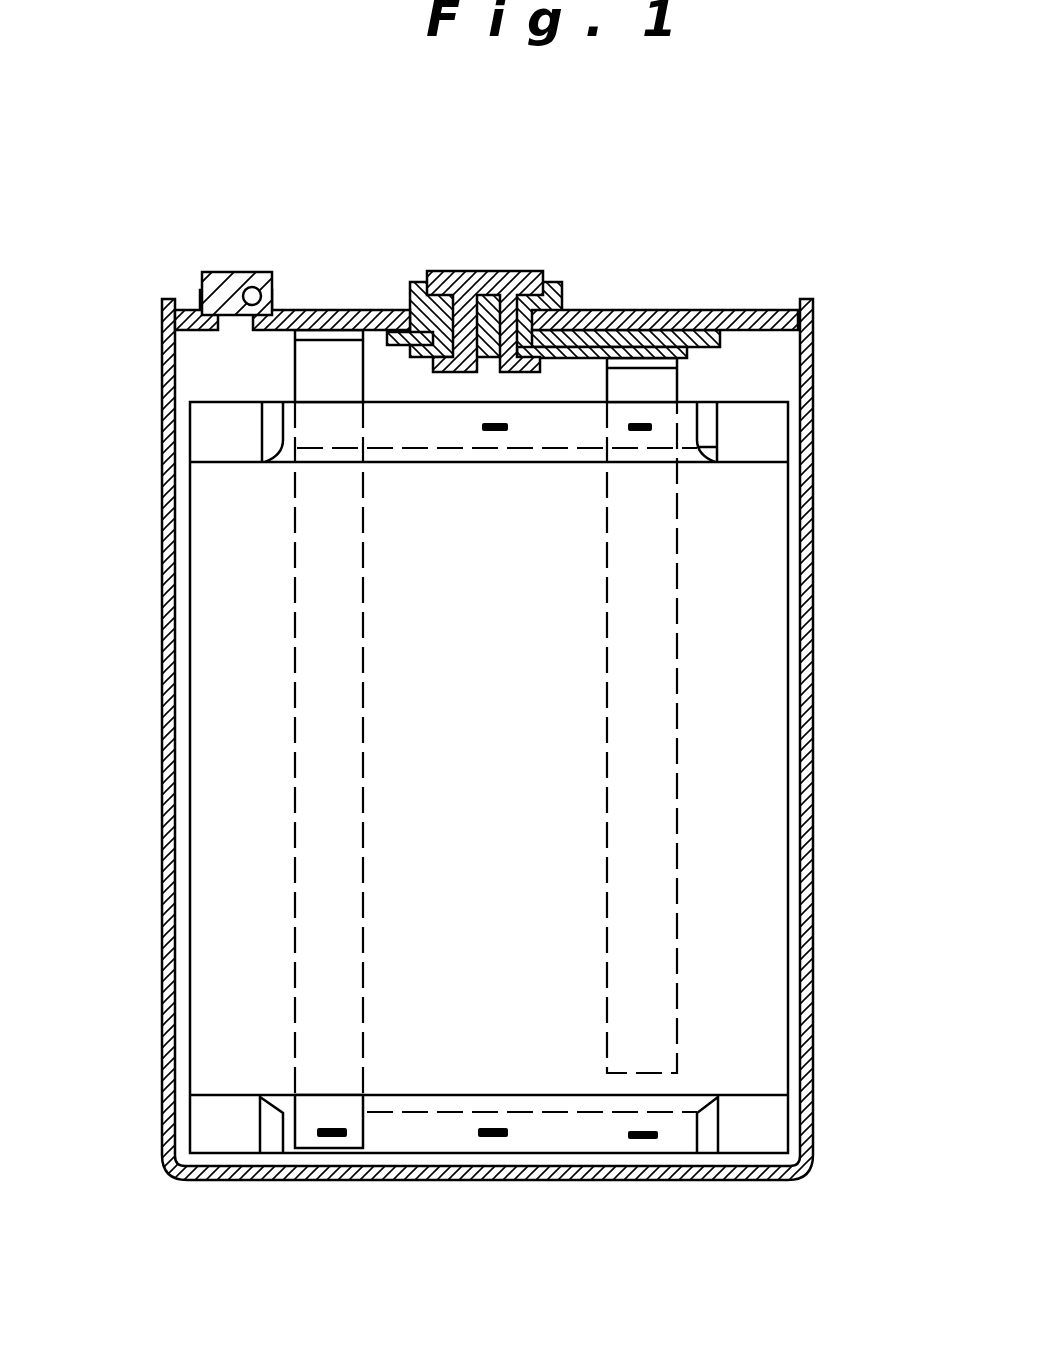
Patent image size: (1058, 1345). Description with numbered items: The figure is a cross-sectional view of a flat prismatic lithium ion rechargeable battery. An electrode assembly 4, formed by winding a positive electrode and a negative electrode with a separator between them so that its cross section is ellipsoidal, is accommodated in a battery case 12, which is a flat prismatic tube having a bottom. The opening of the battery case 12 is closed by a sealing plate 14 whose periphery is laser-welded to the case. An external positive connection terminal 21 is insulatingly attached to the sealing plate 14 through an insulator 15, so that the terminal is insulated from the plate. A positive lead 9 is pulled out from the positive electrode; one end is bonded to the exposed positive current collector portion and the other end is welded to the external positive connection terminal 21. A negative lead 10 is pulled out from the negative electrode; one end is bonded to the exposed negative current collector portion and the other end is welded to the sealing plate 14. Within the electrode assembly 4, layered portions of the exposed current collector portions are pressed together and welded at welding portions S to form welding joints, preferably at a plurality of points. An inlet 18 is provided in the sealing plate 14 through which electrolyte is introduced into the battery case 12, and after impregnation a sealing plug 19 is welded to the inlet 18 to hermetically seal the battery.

The electrode assembly 4 is at (770, 548).
The positive lead 9 is at (655, 383).
The negative lead 10 is at (310, 372).
The battery case 12 is at (813, 690).
The sealing plate 14 is at (357, 313).
The insulator 15 is at (620, 318).
The inlet 18 is at (252, 275).
The sealing plug 19 is at (222, 273).
The external positive connection terminal 21 is at (502, 270).
The welding portion S is at (648, 434).